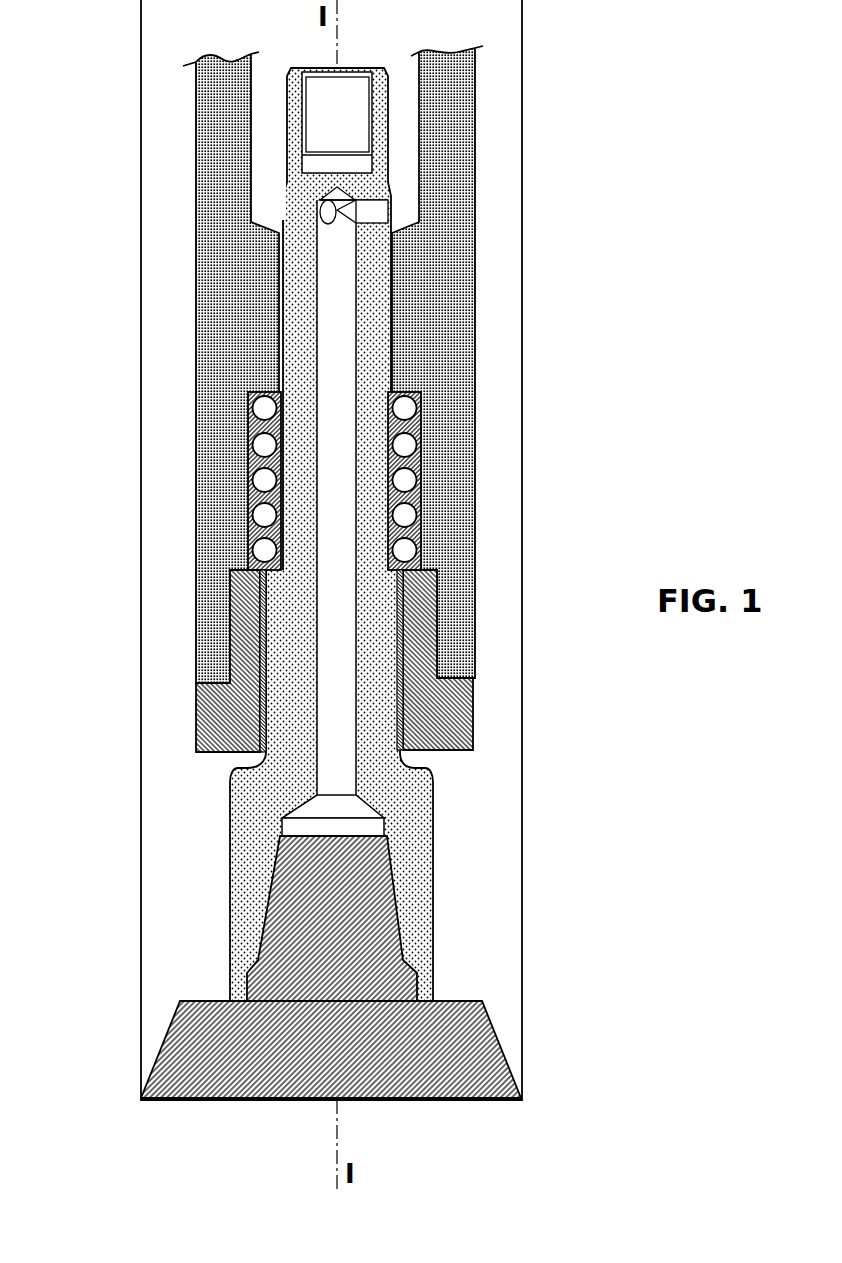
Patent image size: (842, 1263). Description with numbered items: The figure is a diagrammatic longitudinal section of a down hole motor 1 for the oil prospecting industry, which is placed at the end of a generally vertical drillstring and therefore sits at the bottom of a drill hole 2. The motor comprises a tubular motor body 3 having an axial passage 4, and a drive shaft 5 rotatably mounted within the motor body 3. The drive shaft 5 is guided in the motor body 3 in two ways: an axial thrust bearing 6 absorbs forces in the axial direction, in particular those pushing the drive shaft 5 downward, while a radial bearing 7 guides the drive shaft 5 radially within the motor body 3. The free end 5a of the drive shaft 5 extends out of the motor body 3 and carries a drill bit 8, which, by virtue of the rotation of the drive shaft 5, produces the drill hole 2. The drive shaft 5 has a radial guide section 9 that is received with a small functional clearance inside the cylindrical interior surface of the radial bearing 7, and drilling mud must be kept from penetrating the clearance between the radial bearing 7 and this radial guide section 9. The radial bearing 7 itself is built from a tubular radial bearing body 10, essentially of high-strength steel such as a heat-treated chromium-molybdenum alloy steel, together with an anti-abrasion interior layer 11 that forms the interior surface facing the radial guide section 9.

The down hole motor 1 is at (188, 445).
The drill hole 2 is at (519, 861).
The tubular motor body 3 is at (235, 292).
The axial passage 4 is at (273, 114).
The drive shaft 5 is at (300, 263).
The free end 5a is at (245, 933).
The axial thrust bearing 6 is at (411, 465).
The radial bearing 7 is at (438, 708).
The drill bit 8 is at (250, 1077).
The radial guide section 9 is at (298, 705).
The tubular radial bearing body 10 is at (243, 633).
The anti-abrasion interior layer 11 is at (260, 601).